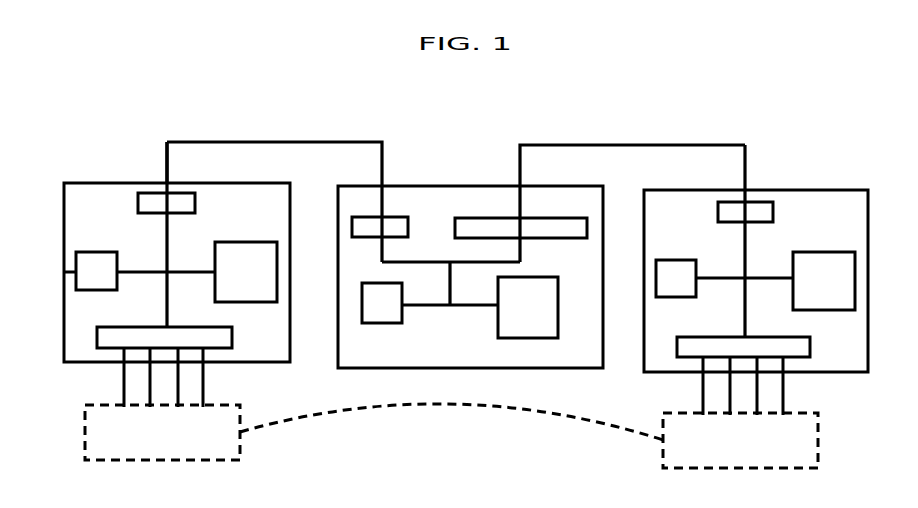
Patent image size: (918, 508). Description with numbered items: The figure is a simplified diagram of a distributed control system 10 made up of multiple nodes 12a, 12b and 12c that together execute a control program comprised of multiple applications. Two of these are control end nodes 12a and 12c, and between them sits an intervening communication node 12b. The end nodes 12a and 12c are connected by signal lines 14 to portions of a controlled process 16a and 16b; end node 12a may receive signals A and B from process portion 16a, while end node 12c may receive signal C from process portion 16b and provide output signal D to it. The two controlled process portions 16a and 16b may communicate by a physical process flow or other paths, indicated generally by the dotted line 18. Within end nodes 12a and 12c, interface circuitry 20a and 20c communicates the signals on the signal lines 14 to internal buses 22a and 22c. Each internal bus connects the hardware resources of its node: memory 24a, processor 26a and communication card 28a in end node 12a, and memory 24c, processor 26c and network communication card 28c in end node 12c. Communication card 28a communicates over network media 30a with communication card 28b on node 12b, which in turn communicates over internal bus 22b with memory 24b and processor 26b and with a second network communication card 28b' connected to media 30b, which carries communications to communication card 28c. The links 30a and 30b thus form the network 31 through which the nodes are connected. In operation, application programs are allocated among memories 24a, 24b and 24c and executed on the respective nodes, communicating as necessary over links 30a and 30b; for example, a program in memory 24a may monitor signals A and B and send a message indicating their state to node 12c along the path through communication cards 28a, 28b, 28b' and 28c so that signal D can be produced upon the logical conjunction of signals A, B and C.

The distributed control system 10 is at (747, 129).
The end node 12a is at (96, 183).
The intervening communication node 12b is at (467, 186).
The end node 12c is at (813, 190).
The signal lines 14 is at (178, 377).
The controlled process portion 16a is at (85, 426).
The controlled process portion 16b is at (818, 438).
The dotted line 18 is at (453, 407).
The interface circuitry 20a is at (97, 337).
The interface circuitry 20c is at (677, 346).
The internal bus 22a is at (165, 226).
The internal bus 22b is at (463, 307).
The internal bus 22c is at (748, 243).
The memory 24a is at (277, 271).
The memory 24b is at (530, 277).
The memory 24c is at (833, 311).
The processor 26a is at (64, 272).
The processor 26b is at (378, 324).
The processor 26c is at (672, 298).
The communication card 28a is at (195, 203).
The communication card 28b is at (399, 214).
The second network communication card 28b' is at (525, 215).
The network communication card 28c is at (717, 208).
The network media 30a is at (273, 142).
The network media 30b is at (635, 145).
The network 31 is at (218, 126).